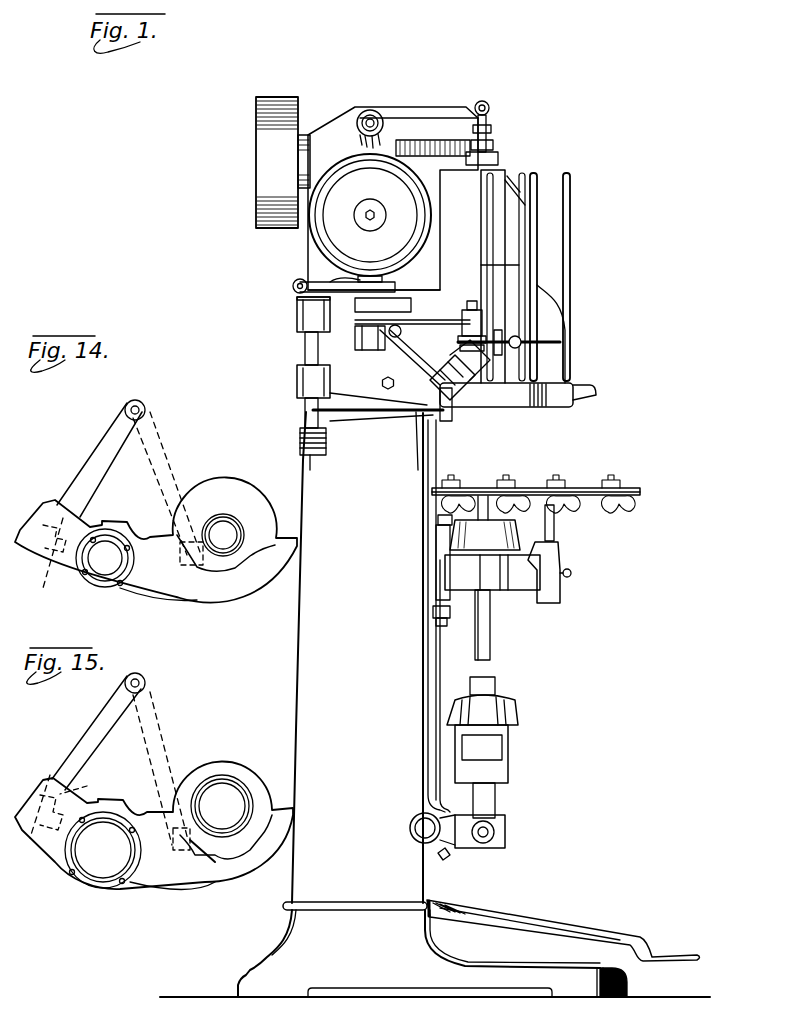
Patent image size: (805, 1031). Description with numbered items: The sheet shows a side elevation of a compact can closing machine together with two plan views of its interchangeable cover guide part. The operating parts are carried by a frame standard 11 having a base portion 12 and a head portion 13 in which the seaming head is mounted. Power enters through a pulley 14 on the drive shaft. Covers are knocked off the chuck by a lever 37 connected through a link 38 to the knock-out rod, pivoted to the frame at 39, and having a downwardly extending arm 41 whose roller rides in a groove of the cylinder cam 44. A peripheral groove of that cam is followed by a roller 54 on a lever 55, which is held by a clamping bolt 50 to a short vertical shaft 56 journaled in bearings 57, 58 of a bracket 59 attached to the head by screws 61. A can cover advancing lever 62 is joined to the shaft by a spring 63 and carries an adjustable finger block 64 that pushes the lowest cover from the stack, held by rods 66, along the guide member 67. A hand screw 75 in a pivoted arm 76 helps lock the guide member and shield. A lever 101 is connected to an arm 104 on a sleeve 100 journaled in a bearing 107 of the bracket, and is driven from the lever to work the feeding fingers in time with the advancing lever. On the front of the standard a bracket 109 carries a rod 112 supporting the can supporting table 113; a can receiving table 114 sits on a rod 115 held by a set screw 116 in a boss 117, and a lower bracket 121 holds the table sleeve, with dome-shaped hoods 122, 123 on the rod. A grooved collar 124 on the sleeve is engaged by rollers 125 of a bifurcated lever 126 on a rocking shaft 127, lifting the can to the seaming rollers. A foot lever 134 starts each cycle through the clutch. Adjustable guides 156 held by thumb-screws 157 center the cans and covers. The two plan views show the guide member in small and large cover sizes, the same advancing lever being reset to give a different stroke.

In FIG. 1, the frame standard 11 is at (300, 740).
In FIG. 1, the base portion 12 is at (270, 950).
In FIG. 1, the head portion 13 is at (410, 107).
In FIG. 1, the pulley 14 is at (258, 110).
In FIG. 1, the lever 37 is at (440, 128).
In FIG. 1, the link 38 is at (492, 110).
In FIG. 1, the pivot 39 is at (372, 110).
In FIG. 1, the downwardly extending arm 41 is at (415, 150).
In FIG. 1, the cylinder cam 44 is at (430, 237).
In FIG. 1, the clamping bolt 50 is at (292, 285).
In FIG. 1, the roller 54 is at (378, 283).
In FIG. 1, the lever 55 is at (345, 288).
In FIG. 1, the short vertical shaft 56 is at (305, 347).
In FIG. 1, the bearing 57 is at (300, 313).
In FIG. 1, the bearing 58 is at (300, 383).
In FIG. 1, the bracket 59 is at (365, 385).
In FIG. 1, the screws 61 is at (388, 391).
In FIG. 1, the can cover advancing lever 62 is at (410, 414).
In FIG. 14, the can cover advancing lever 62 is at (100, 460).
In FIG. 15, the can cover advancing lever 62 is at (80, 748).
In FIG. 1, the spring 63 is at (300, 440).
In FIG. 14, the finger block 64 is at (42, 590).
In FIG. 15, the finger block 64 is at (110, 771).
In FIG. 1, the rods 66 is at (538, 272).
In FIG. 14, the guide member 67 is at (160, 595).
In FIG. 15, the guide member 67 is at (165, 880).
In FIG. 1, the hand screw 75 is at (470, 338).
In FIG. 1, the pivoted arm 76 is at (445, 388).
In FIG. 1, the sleeve 100 is at (298, 300).
In FIG. 1, the lever 101 is at (405, 322).
In FIG. 1, the arm 104 is at (370, 330).
In FIG. 1, the bearing 107 is at (380, 337).
In FIG. 1, the bracket 109 is at (438, 620).
In FIG. 1, the rod 112 is at (490, 630).
In FIG. 1, the can supporting table 113 is at (487, 486).
In FIG. 1, the can receiving table 114 is at (640, 491).
In FIG. 1, the rod 115 is at (556, 528).
In FIG. 1, the set screw 116 is at (571, 573).
In FIG. 1, the boss 117 is at (560, 552).
In FIG. 1, the bracket 121 is at (436, 730).
In FIG. 1, the dome-shaped hood 122 is at (445, 540).
In FIG. 1, the dome-shaped hood 123 is at (518, 712).
In FIG. 1, the grooved collar 124 is at (505, 840).
In FIG. 1, the rollers 125 is at (496, 830).
In FIG. 1, the bifurcated lever 126 is at (445, 858).
In FIG. 1, the shaft 127 is at (411, 833).
In FIG. 1, the foot lever 134 is at (590, 930).
In FIG. 1, the adjustable guides 156 is at (526, 486).
In FIG. 1, the thumb-screws 157 is at (617, 510).